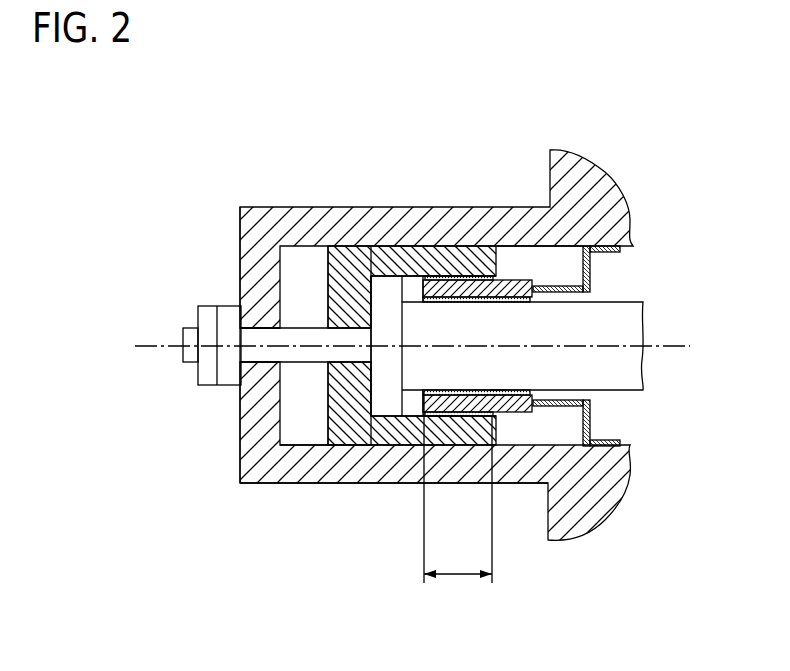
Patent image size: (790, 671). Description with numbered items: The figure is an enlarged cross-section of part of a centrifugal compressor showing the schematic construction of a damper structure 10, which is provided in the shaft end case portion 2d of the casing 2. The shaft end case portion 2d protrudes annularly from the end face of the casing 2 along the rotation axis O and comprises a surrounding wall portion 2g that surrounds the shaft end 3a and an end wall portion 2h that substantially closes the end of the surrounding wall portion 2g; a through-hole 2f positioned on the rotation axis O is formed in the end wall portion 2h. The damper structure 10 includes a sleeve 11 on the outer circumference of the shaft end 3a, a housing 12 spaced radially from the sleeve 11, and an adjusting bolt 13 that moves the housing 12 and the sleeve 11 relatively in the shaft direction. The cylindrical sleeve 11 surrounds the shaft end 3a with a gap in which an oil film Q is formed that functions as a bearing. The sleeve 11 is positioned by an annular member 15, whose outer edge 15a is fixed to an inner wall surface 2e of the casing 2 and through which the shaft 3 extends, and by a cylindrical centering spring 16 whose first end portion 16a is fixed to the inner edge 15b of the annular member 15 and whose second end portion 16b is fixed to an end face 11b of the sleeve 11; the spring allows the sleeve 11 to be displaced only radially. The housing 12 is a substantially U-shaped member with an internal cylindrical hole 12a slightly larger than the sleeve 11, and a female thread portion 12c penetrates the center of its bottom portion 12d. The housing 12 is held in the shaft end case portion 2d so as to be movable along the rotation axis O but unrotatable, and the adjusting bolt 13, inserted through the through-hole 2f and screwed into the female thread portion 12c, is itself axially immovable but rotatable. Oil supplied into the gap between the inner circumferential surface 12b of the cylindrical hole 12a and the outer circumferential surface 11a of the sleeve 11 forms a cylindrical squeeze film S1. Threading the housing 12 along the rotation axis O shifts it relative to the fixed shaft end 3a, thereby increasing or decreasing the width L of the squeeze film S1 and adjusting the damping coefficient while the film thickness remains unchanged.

The damper structure 10 is at (210, 170).
The casing 2 is at (393, 373).
The shaft end case portion 2d is at (355, 495).
The inner wall surface 2e is at (567, 250).
The through-hole 2f is at (259, 362).
The surrounding wall portion 2g is at (292, 478).
The end wall portion 2h is at (244, 435).
The adjusting bolt 13 is at (230, 318).
The housing 12 is at (487, 270).
The cylindrical hole 12a is at (384, 300).
The inner circumferential surface 12b is at (415, 283).
The female thread portion 12c is at (348, 330).
The bottom portion 12d is at (338, 397).
The shaft 3 is at (511, 446).
The shaft end 3a is at (423, 362).
The sleeve 11 is at (515, 292).
The outer circumferential surface 11a is at (528, 283).
The end face 11b is at (533, 300).
The annular member 15 is at (592, 268).
The outer edge 15a is at (607, 247).
The inner edge 15b is at (597, 300).
The centering spring 16 is at (557, 392).
The first end portion 16a is at (590, 400).
The second end portion 16b is at (532, 402).
The squeeze film S1 is at (472, 276).
The rotation axis O is at (683, 344).
The oil film Q is at (497, 392).
The width L is at (459, 506).